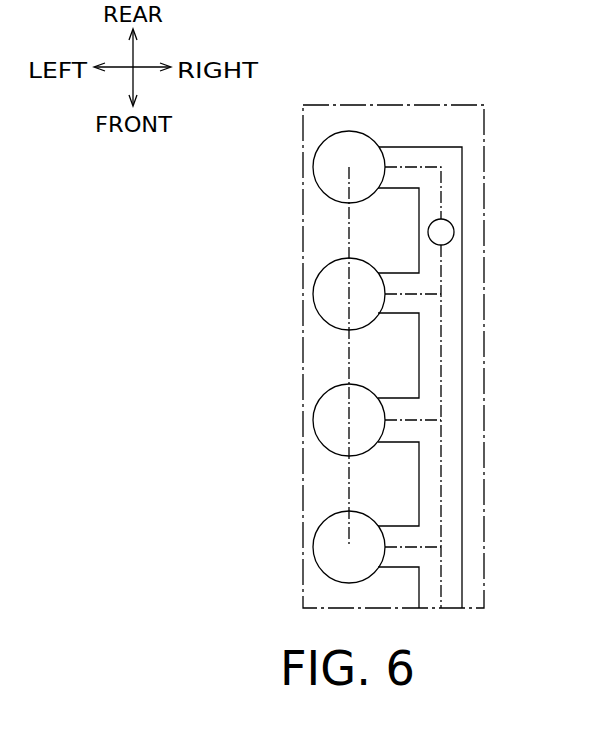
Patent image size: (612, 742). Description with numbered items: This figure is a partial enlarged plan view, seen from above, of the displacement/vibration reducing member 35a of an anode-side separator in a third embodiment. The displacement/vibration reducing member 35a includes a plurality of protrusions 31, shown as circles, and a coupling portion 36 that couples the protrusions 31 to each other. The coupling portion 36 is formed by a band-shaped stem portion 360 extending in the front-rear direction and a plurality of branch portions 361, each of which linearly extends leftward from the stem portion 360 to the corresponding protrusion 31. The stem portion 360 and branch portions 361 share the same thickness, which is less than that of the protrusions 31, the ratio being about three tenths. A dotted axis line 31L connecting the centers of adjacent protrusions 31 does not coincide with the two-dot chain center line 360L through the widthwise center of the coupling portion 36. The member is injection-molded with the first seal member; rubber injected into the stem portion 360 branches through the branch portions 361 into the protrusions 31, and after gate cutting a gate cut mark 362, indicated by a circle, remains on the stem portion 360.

The protrusions 31 is at (333, 293).
The axis line 31L is at (348, 485).
The displacement/vibration reducing member 35a is at (294, 369).
The coupling portion 36 is at (428, 368).
The stem portion 360 is at (452, 297).
The center line 360L is at (442, 483).
The branch portions 361 is at (400, 160).
The gate cut mark 362 is at (441, 219).